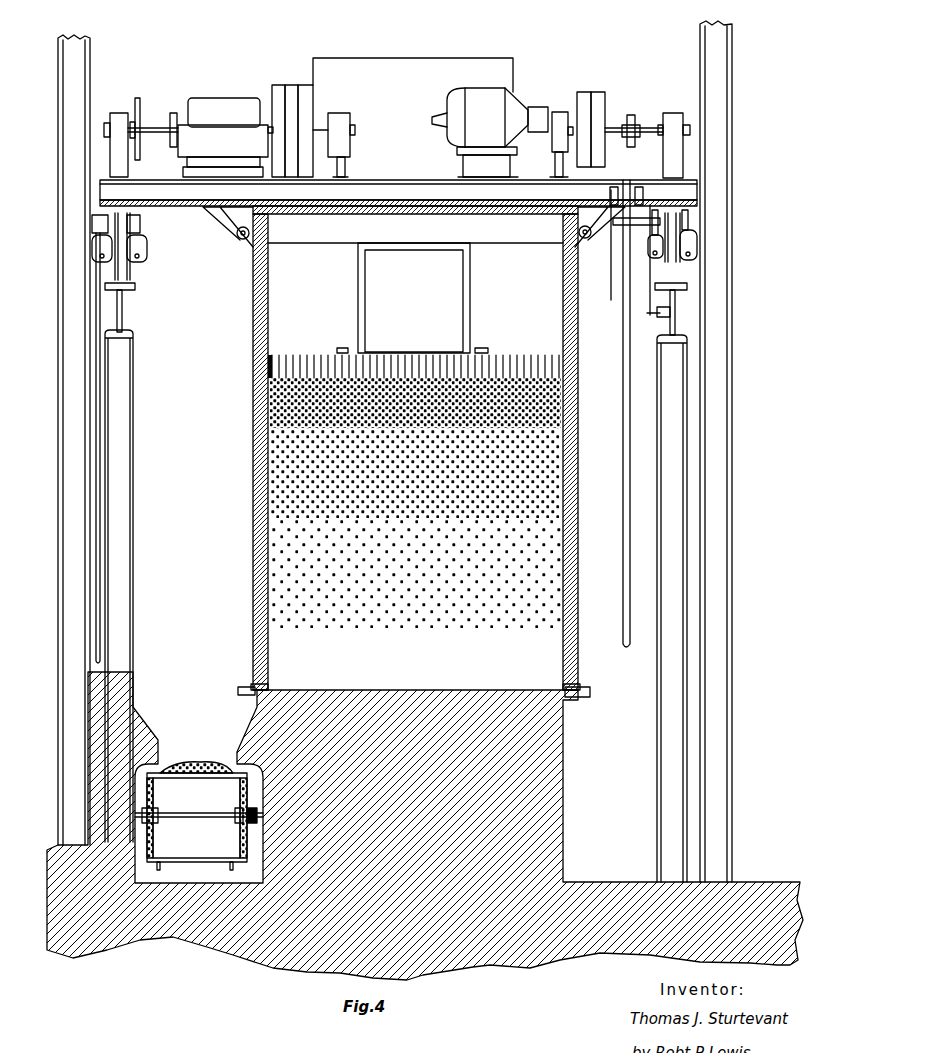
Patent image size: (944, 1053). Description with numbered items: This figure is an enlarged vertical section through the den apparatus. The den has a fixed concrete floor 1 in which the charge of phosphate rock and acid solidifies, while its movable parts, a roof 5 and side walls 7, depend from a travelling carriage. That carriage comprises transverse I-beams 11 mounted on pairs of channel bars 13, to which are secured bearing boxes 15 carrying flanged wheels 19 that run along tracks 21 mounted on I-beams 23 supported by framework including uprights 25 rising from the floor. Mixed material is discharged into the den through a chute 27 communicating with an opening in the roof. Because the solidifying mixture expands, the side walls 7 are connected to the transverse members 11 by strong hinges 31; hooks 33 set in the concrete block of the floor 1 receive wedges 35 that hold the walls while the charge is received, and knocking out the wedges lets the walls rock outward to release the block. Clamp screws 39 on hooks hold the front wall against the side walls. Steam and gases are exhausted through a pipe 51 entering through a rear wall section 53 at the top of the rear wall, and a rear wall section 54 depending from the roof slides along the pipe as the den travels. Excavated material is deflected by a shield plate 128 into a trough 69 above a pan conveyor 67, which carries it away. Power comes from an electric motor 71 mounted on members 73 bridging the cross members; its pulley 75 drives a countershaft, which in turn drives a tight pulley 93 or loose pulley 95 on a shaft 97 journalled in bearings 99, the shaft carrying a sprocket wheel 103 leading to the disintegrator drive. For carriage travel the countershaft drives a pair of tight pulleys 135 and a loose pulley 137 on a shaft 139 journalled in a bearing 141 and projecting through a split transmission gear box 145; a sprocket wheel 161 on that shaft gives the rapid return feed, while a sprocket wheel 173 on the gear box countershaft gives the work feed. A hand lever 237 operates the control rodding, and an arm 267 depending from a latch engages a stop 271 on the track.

The concrete floor 1 is at (333, 700).
The roof 5 is at (330, 214).
The side walls 7 is at (253, 464).
The transverse I-beams 11 is at (570, 189).
The channel bars 13 is at (98, 222).
The bearing boxes 15 is at (102, 247).
The flanged wheels 19 is at (130, 270).
The tracks 21 is at (135, 287).
The I-beams 23 is at (125, 312).
The uprights 25 is at (125, 430).
The chute 27 is at (408, 60).
The hinges 31 is at (240, 236).
The hooks 33 is at (238, 692).
The wedges 35 is at (250, 684).
The clamp screws 39 is at (560, 112).
The pipe 51 is at (448, 313).
The rear wall section 53 is at (514, 338).
The rear wall section 54 is at (502, 240).
The pan conveyor 67 is at (203, 762).
The trough 69 is at (196, 745).
The electric motor 71 is at (497, 80).
The members 73 is at (510, 166).
The pulley 75 is at (537, 107).
The tight pulley 93 is at (588, 92).
The loose pulley 95 is at (607, 98).
The shaft 97 is at (648, 132).
The bearings 99 is at (687, 107).
The sprocket wheel 103 is at (633, 117).
The shield plate 128 is at (98, 554).
The tight pulleys 135 is at (278, 85).
The loose pulley 137 is at (295, 85).
The shaft 139 is at (155, 137).
The bearing 141 is at (117, 104).
The split transmission gear box 145 is at (230, 98).
The sprocket wheel 161 is at (140, 103).
The sprocket wheel 173 is at (173, 113).
The hand lever 237 is at (632, 350).
The arm 267 is at (650, 288).
The stop 271 is at (647, 315).